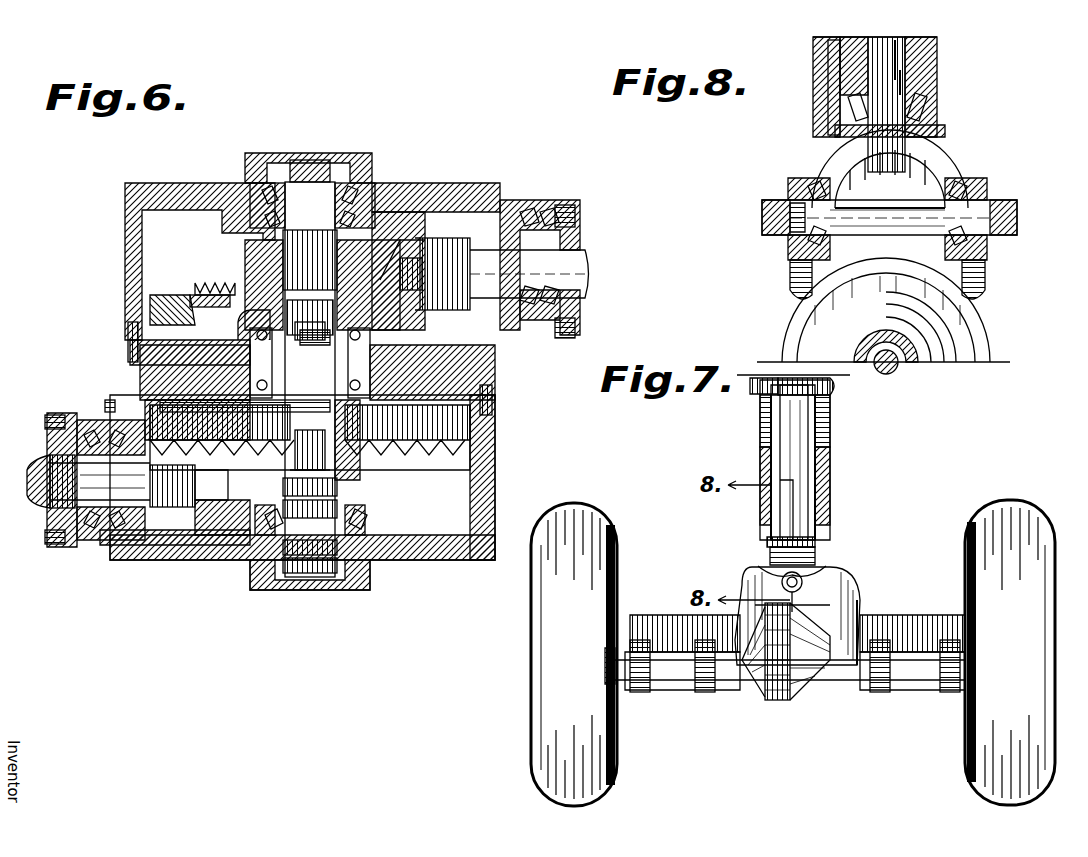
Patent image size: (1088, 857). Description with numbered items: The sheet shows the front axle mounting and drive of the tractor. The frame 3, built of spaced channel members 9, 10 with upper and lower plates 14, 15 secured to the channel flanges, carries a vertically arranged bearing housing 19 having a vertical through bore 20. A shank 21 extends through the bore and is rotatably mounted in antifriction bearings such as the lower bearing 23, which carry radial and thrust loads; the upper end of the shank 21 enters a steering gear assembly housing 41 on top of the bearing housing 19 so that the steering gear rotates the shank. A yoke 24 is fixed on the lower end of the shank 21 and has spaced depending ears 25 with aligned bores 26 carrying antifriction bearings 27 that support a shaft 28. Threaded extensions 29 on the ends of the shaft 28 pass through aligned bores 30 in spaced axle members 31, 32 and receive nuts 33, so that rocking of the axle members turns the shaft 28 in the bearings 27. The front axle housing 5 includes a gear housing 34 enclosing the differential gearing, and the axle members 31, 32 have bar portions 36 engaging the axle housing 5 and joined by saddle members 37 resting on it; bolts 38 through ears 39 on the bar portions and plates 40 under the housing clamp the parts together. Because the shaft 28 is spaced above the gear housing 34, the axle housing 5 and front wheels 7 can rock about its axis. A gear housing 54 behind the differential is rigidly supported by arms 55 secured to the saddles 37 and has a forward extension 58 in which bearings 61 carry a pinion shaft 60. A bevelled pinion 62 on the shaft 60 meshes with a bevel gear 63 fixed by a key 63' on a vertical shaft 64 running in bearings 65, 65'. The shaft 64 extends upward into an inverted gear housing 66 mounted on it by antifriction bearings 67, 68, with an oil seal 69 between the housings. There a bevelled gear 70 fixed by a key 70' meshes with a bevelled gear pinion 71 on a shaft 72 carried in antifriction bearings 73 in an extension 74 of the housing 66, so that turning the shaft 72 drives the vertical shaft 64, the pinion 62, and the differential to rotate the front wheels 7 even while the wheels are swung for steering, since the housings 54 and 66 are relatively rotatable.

In FIG. 8, the frame 3 is at (813, 72).
In FIG. 7, the frame 3 is at (825, 428).
In FIG. 8, the front axle housing 5 is at (960, 362).
In FIG. 7, the front axle housing 5 is at (835, 672).
In FIG. 7, the front wheels 7 is at (1015, 505).
In FIG. 7, the channel member 9 is at (825, 463).
In FIG. 8, the channel member 10 is at (828, 108).
In FIG. 7, the channel member 10 is at (772, 455).
In FIG. 7, the upper plate 14 is at (825, 440).
In FIG. 8, the lower plate 15 is at (940, 40).
In FIG. 7, the lower plate 15 is at (822, 530).
In FIG. 8, the bearing housing 19 is at (840, 44).
In FIG. 7, the bearing housing 19 is at (808, 493).
In FIG. 8, the vertical through bore 20 is at (905, 66).
In FIG. 8, the shank 21 is at (907, 80).
In FIG. 8, the antifriction bearing 23 is at (930, 108).
In FIG. 8, the yoke 24 is at (832, 150).
In FIG. 7, the yoke 24 is at (768, 546).
In FIG. 8, the depending ears 25 is at (790, 278).
In FIG. 7, the depending ears 25 is at (815, 552).
In FIG. 8, the aligned bores 26 is at (805, 178).
In FIG. 8, the antifriction bearings 27 is at (805, 190).
In FIG. 8, the shaft 28 is at (855, 205).
In FIG. 8, the threaded extensions 29 is at (762, 218).
In FIG. 7, the threaded extensions 29 is at (802, 578).
In FIG. 8, the aligned bores 30 is at (790, 232).
In FIG. 8, the axle member 31 is at (790, 258).
In FIG. 7, the axle member 31 is at (855, 600).
In FIG. 8, the axle member 32 is at (985, 268).
In FIG. 8, the nuts 33 is at (1005, 215).
In FIG. 7, the nuts 33 is at (770, 575).
In FIG. 8, the gear housing 34 is at (965, 345).
In FIG. 7, the gear housing 34 is at (765, 690).
In FIG. 7, the bar portions 36 is at (625, 652).
In FIG. 7, the saddle members 37 is at (630, 626).
In FIG. 7, the bolts 38 is at (622, 668).
In FIG. 7, the ears 39 is at (665, 672).
In FIG. 7, the plates 40 is at (645, 680).
In FIG. 7, the steering gear assembly housing 41 is at (752, 388).
In FIG. 6, the gear housing 54 is at (490, 560).
In FIG. 7, the arms 55 is at (905, 615).
In FIG. 6, the extension 58 is at (88, 548).
In FIG. 6, the pinion shaft 60 is at (30, 494).
In FIG. 6, the bearings 61 is at (95, 420).
In FIG. 6, the bevelled pinion 62 is at (178, 505).
In FIG. 6, the bevel gear 63 is at (310, 453).
In FIG. 6, the key 63' is at (375, 440).
In FIG. 6, the vertical shaft 64 is at (340, 515).
In FIG. 6, the bearing 65 is at (345, 539).
In FIG. 6, the bearing 65' is at (310, 446).
In FIG. 6, the gear housing 66 is at (132, 183).
In FIG. 6, the antifriction bearing 67 is at (246, 320).
In FIG. 6, the antifriction bearing 68 is at (258, 190).
In FIG. 6, the oil seal 69 is at (245, 423).
In FIG. 6, the bevelled gear 70 is at (192, 289).
In FIG. 6, the key 70' is at (429, 256).
In FIG. 6, the bevelled gear pinion 71 is at (445, 262).
In FIG. 6, the shaft 72 is at (592, 268).
In FIG. 6, the antifriction bearings 73 is at (528, 210).
In FIG. 6, the extension 74 is at (525, 330).